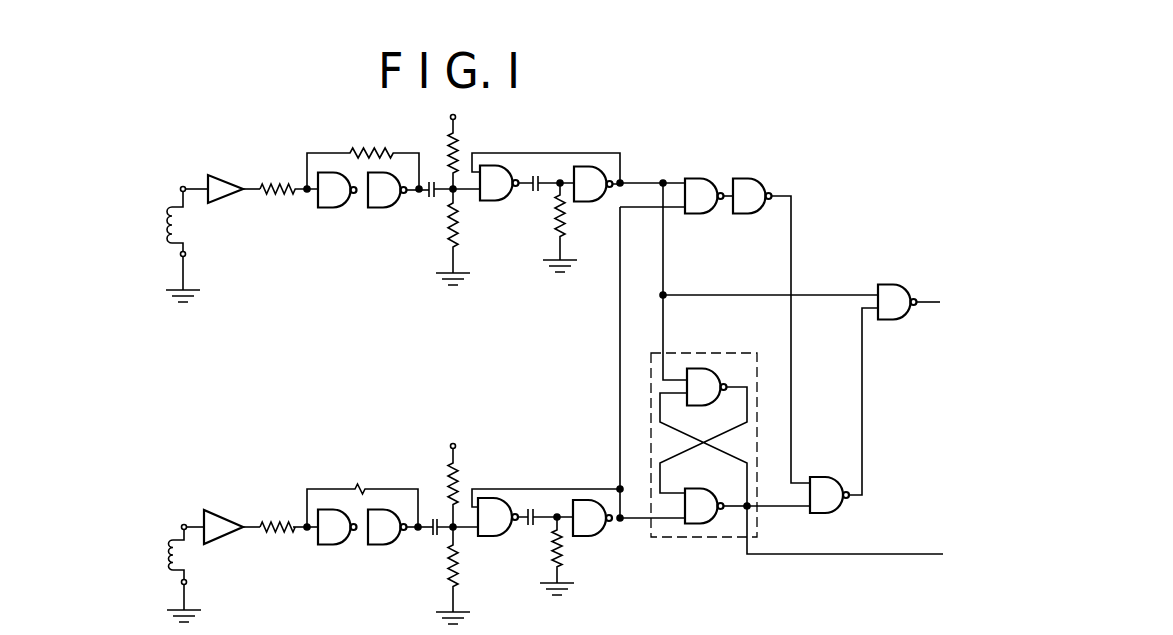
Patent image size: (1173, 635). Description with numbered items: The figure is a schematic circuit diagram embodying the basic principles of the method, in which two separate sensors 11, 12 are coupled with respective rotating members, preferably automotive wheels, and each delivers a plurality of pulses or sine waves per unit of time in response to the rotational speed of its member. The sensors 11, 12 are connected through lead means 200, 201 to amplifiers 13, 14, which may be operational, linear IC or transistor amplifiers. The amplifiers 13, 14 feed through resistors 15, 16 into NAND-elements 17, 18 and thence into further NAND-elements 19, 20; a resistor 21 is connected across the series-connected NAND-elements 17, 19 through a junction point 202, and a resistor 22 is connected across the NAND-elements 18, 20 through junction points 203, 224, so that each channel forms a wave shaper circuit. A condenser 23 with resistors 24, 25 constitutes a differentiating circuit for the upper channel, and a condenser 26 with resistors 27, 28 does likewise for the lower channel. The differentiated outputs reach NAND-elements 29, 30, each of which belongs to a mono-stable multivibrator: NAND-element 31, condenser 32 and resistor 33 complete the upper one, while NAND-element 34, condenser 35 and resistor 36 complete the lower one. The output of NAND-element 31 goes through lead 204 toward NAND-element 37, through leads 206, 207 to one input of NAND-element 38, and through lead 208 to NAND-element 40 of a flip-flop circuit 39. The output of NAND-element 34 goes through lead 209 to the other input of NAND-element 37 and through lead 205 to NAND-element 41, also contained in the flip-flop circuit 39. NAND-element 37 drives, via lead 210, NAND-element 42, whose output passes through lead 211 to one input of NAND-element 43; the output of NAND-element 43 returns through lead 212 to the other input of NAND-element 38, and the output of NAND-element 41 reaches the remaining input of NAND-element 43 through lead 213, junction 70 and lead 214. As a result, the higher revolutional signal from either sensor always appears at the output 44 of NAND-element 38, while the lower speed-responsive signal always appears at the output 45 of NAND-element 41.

The sensor 11 is at (160, 218).
The sensor 12 is at (162, 560).
The amplifier 13 is at (222, 183).
The amplifier 14 is at (222, 510).
The resistor 15 is at (278, 194).
The resistor 16 is at (280, 520).
The NAND-element 17 is at (335, 207).
The NAND-element 18 is at (322, 543).
The NAND-element 19 is at (388, 207).
The NAND-element 20 is at (385, 545).
The resistor 21 is at (356, 152).
The resistor 22 is at (372, 488).
The condenser 23 is at (430, 197).
The resistor 24 is at (460, 150).
The resistor 25 is at (456, 240).
The condenser 26 is at (432, 538).
The resistor 27 is at (458, 486).
The resistor 28 is at (457, 567).
The NAND-element 29 is at (498, 200).
The NAND-element 30 is at (498, 537).
The NAND-element 31 is at (592, 201).
The condenser 32 is at (536, 176).
The resistor 33 is at (555, 230).
The NAND-element 34 is at (594, 537).
The condenser 35 is at (532, 510).
The resistor 36 is at (565, 560).
The NAND-element 37 is at (695, 183).
The NAND-element 38 is at (893, 285).
The flip-flop circuit 39 is at (650, 412).
The NAND-element 40 is at (705, 378).
The NAND-element 41 is at (695, 524).
The NAND-element 42 is at (748, 182).
The NAND-element 43 is at (849, 485).
The output 44 is at (925, 304).
The output 45 is at (812, 555).
The junction 70 is at (744, 515).
The lead means 200 is at (188, 186).
The lead means 201 is at (187, 522).
The junction point 202 is at (306, 186).
The junction point 203 is at (428, 180).
The lead 204 is at (638, 181).
The lead 205 is at (640, 520).
The lead 206 is at (665, 268).
The lead 207 is at (808, 295).
The lead 208 is at (662, 327).
The lead 209 is at (619, 372).
The lead 210 is at (728, 200).
The lead 211 is at (792, 378).
The lead 212 is at (864, 378).
The lead 213 is at (730, 498).
The lead 214 is at (775, 507).
The junction point 224 is at (422, 524).